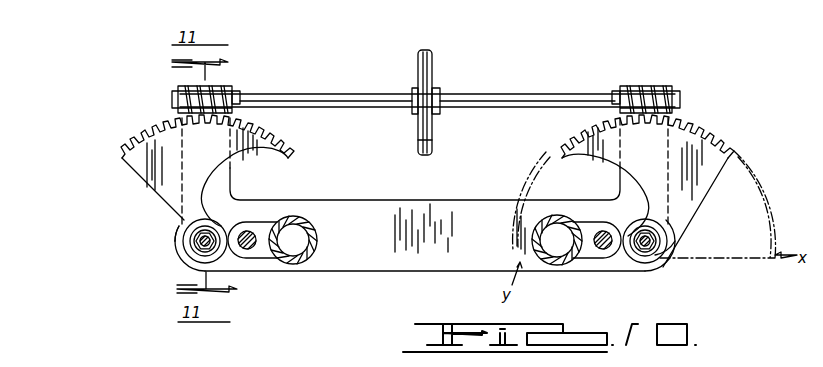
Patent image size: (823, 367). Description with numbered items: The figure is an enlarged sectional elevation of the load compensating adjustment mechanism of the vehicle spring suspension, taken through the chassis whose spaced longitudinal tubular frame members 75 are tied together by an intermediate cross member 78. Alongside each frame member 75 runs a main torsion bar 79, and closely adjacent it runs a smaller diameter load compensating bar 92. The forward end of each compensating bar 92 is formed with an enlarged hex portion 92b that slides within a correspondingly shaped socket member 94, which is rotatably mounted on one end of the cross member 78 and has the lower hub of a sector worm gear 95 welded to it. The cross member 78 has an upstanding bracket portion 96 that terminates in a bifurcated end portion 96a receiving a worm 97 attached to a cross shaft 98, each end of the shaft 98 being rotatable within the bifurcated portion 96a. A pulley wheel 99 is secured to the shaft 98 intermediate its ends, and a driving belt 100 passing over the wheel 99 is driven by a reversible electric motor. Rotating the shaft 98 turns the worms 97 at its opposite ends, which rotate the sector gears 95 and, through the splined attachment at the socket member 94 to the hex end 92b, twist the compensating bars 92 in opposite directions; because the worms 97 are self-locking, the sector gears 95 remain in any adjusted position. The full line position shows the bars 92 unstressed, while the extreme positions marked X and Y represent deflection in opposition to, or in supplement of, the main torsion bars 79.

The frame members 75 is at (553, 265).
The intermediate cross member 78 is at (423, 258).
The torsion bar 79 is at (603, 250).
The load compensating bar 92 is at (647, 248).
The hex portion 92b is at (665, 263).
The socket member 94 is at (657, 215).
The sector worm gear 95 is at (713, 138).
The bracket portion 96 is at (625, 183).
The bifurcated end portion 96a is at (672, 92).
The worm 97 is at (640, 88).
The cross shaft 98 is at (325, 95).
The pulley wheel 99 is at (417, 148).
The driving belt 100 is at (428, 52).